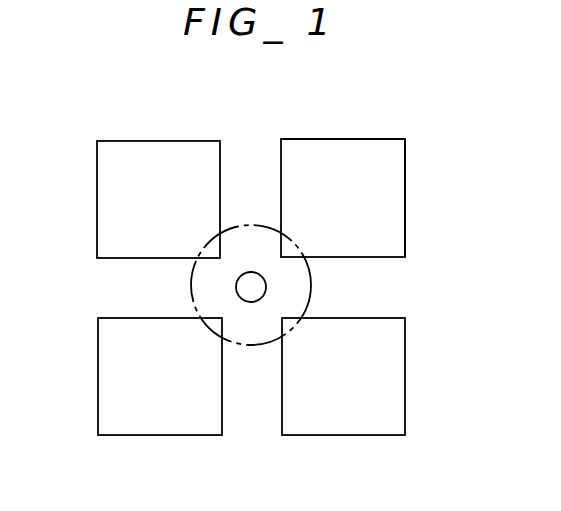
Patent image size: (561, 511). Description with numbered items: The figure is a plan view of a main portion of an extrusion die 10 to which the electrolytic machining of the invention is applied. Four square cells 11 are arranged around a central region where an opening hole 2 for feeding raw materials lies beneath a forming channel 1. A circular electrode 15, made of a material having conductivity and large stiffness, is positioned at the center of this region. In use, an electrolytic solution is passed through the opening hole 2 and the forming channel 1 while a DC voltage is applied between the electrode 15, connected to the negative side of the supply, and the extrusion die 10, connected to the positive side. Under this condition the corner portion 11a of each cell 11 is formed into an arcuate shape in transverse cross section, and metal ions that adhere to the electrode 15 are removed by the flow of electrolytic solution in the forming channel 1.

The forming channel 1 is at (370, 275).
The opening hole 2 is at (252, 333).
The extrusion die 10 is at (290, 118).
The cell 11 is at (393, 183).
The corner portion 11a is at (359, 174).
The electrode 15 is at (258, 287).